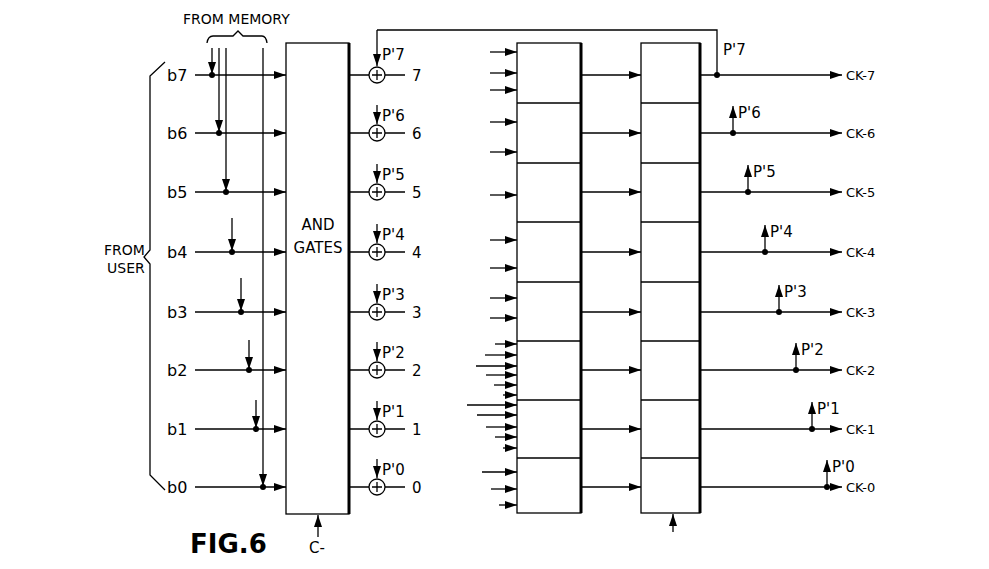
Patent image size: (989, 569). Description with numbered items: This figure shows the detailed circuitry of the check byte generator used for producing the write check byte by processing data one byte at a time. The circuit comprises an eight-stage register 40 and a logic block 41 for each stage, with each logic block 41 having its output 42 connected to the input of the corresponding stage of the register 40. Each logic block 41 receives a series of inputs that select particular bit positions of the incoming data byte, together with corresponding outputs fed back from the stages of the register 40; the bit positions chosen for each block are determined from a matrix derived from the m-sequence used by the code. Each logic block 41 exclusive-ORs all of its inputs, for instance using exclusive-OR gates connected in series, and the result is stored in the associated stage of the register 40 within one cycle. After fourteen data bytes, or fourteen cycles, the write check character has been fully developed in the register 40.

The eight-stage register 40 is at (656, 41).
The logic block 41 is at (542, 41).
The output 42 is at (611, 268).